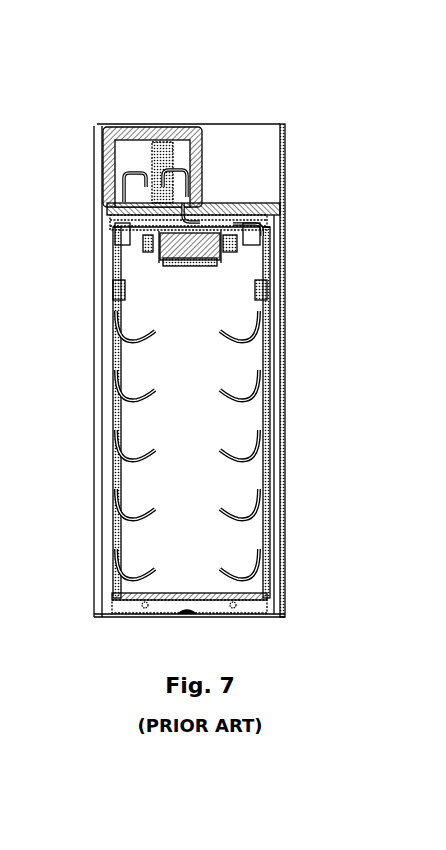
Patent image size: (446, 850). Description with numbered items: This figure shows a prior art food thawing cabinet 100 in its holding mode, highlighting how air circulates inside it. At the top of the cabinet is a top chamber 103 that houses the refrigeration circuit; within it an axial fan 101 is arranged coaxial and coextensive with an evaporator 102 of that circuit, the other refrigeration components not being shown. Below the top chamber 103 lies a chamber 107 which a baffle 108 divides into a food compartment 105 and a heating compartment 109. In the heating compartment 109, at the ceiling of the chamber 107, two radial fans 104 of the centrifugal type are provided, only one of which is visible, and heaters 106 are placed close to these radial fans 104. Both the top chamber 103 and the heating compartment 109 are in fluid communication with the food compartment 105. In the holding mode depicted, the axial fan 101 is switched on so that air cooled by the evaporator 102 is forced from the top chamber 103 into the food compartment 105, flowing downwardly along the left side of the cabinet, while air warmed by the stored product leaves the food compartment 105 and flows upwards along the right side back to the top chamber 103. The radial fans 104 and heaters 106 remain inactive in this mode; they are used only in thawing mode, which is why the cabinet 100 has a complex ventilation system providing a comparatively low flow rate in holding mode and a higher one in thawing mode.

The food thawing cabinet 100 is at (277, 84).
The axial fan 101 is at (120, 128).
The evaporator 102 is at (150, 142).
The top chamber 103 is at (245, 174).
The radial fan 104 is at (190, 261).
The food compartment 105 is at (190, 432).
The heater 106 is at (150, 245).
The chamber 107 is at (283, 397).
The baffle 108 is at (128, 286).
The heating compartment 109 is at (280, 237).